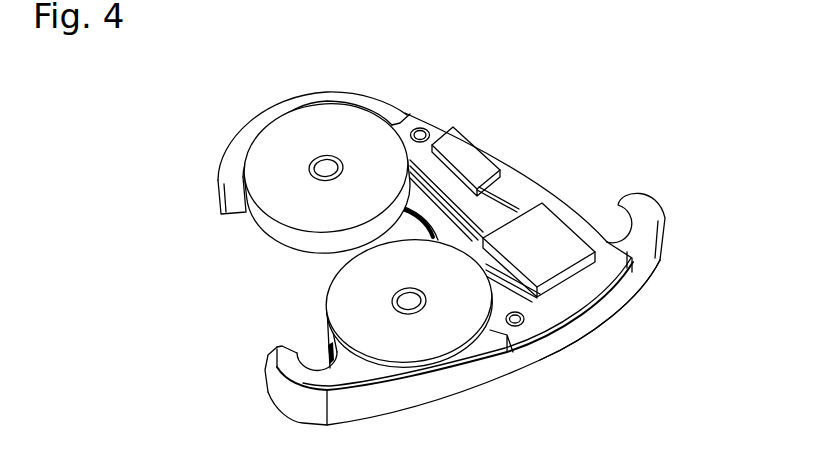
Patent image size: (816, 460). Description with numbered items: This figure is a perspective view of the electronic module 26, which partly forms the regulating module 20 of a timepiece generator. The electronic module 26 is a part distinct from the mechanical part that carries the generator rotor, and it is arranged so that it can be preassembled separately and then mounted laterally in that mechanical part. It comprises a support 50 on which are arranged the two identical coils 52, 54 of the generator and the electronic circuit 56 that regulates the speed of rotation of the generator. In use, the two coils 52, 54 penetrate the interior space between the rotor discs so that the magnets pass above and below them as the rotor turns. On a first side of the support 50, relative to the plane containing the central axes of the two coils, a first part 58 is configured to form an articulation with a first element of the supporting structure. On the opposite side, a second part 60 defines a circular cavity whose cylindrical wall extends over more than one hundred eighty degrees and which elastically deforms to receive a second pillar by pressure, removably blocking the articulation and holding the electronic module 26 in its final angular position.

The regulating module 20 is at (627, 459).
The electronic module 26 is at (492, 140).
The support 50 is at (348, 373).
The coil 52 is at (292, 197).
The coil 54 is at (357, 286).
The electronic circuit 56 is at (511, 196).
The first part 58 is at (298, 388).
The second part 60 is at (657, 200).